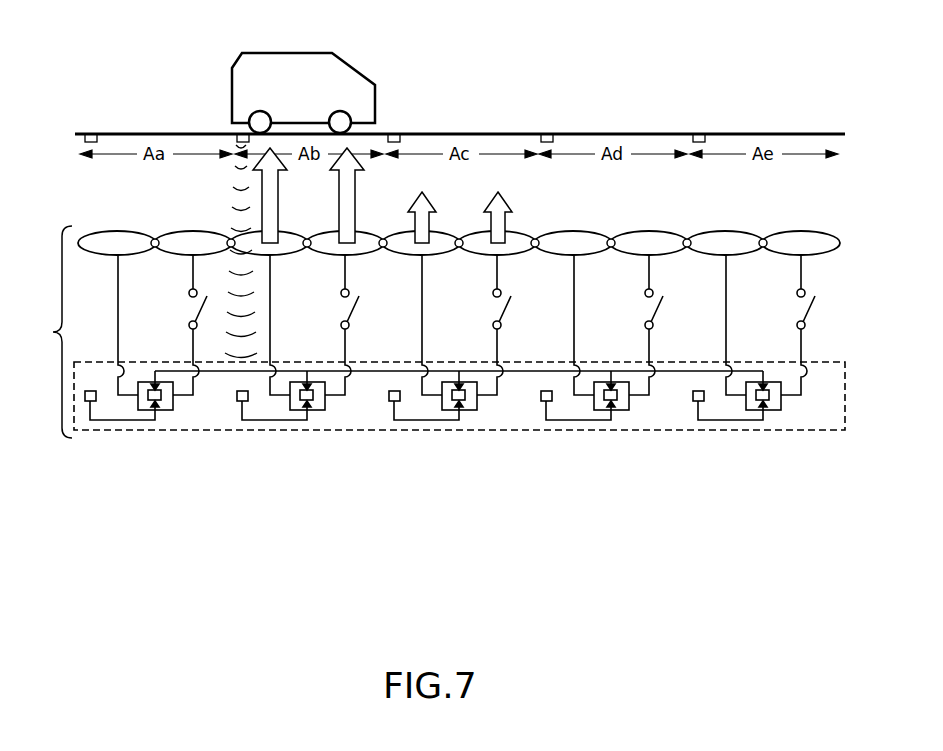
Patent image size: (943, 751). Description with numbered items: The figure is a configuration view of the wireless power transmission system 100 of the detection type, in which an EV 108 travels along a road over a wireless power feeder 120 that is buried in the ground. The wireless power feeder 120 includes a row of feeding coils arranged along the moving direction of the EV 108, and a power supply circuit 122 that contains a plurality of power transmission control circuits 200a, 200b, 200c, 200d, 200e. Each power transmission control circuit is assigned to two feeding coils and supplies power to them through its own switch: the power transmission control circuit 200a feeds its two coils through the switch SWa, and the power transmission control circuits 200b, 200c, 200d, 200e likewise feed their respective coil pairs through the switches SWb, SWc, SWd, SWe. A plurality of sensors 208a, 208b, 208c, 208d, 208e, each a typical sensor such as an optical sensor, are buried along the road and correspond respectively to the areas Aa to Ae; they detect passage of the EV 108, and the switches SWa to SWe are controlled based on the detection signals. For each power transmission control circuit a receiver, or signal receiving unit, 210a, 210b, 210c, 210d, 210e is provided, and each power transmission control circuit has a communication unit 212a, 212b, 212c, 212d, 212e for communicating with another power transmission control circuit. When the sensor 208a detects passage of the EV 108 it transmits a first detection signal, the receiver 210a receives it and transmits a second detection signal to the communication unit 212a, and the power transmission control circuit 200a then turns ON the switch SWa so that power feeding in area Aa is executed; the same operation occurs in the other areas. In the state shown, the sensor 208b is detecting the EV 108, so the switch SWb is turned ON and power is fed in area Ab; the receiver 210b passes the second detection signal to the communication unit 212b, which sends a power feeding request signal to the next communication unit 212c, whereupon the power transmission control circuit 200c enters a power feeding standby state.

The wireless power transmission system 100 is at (446, 530).
The EV 108 is at (288, 52).
The wireless power feeder 120 is at (44, 332).
The power supply circuit 122 is at (97, 361).
The power transmission control circuit 200a is at (166, 412).
The power transmission control circuit 200b is at (318, 412).
The power transmission control circuit 200c is at (470, 412).
The power transmission control circuit 200d is at (622, 412).
The power transmission control circuit 200e is at (774, 412).
The sensor 208a is at (100, 142).
The sensor 208b is at (247, 142).
The sensor 208c is at (402, 140).
The sensor 208d is at (555, 140).
The sensor 208e is at (707, 140).
The receiver 210a is at (110, 422).
The receiver 210b is at (262, 422).
The receiver 210c is at (414, 422).
The receiver 210d is at (566, 422).
The receiver 210e is at (718, 422).
The communication unit 212a is at (137, 381).
The communication unit 212b is at (289, 381).
The communication unit 212c is at (441, 381).
The communication unit 212d is at (593, 381).
The communication unit 212e is at (745, 381).
The switch SWa is at (178, 325).
The switch SWb is at (330, 325).
The switch SWc is at (482, 325).
The switch SWd is at (634, 325).
The switch SWe is at (786, 325).